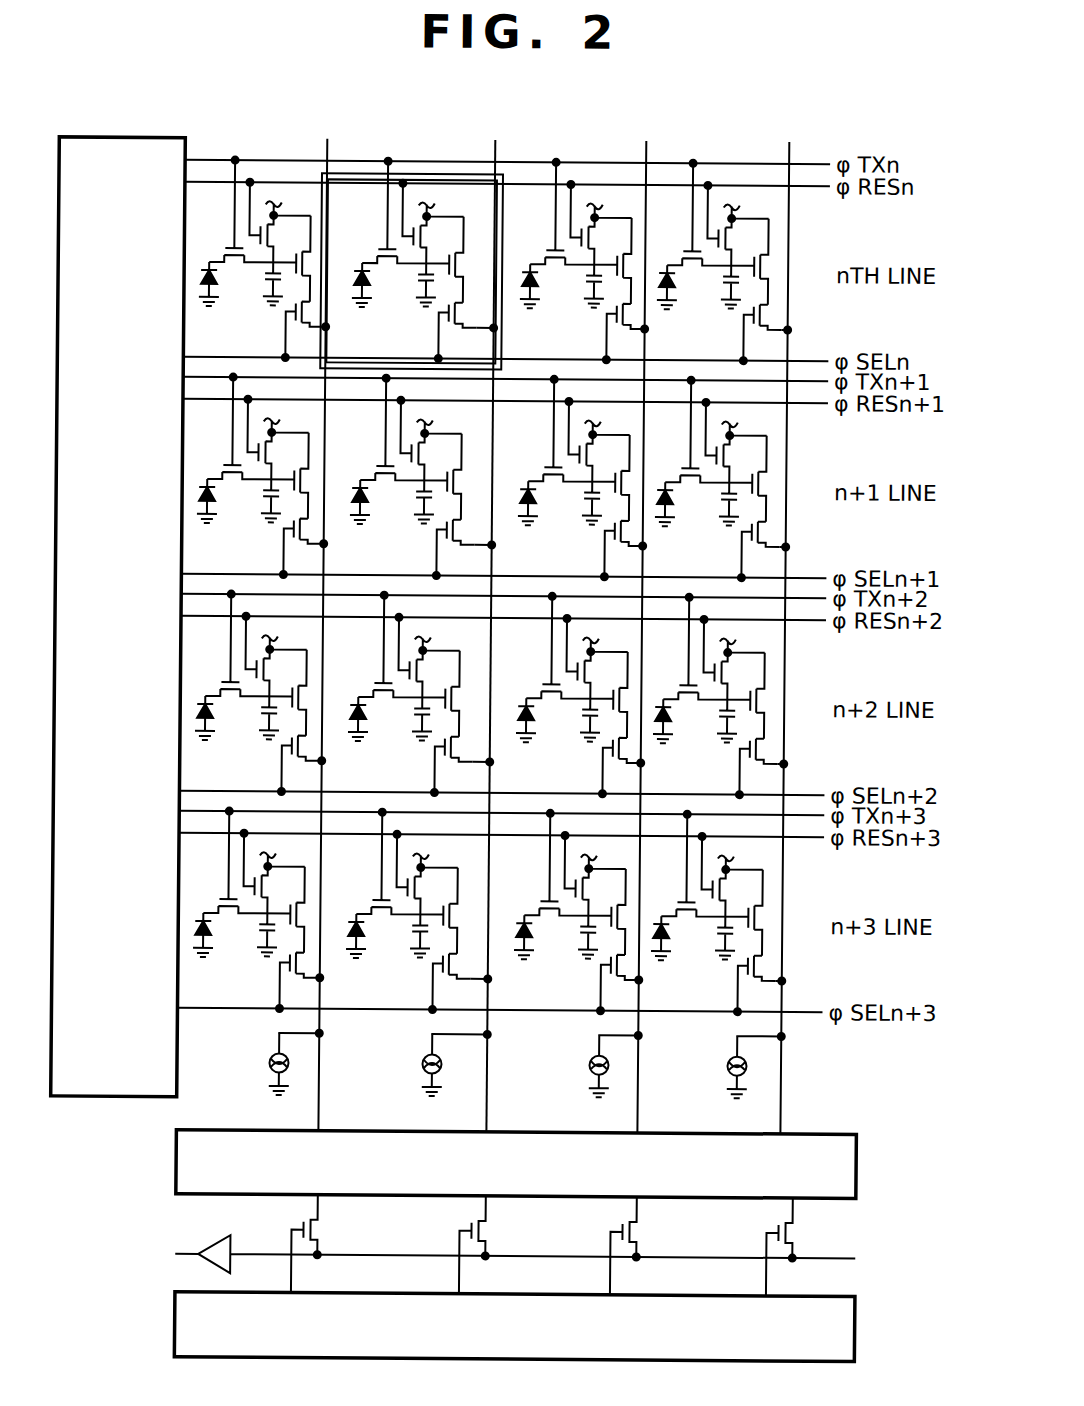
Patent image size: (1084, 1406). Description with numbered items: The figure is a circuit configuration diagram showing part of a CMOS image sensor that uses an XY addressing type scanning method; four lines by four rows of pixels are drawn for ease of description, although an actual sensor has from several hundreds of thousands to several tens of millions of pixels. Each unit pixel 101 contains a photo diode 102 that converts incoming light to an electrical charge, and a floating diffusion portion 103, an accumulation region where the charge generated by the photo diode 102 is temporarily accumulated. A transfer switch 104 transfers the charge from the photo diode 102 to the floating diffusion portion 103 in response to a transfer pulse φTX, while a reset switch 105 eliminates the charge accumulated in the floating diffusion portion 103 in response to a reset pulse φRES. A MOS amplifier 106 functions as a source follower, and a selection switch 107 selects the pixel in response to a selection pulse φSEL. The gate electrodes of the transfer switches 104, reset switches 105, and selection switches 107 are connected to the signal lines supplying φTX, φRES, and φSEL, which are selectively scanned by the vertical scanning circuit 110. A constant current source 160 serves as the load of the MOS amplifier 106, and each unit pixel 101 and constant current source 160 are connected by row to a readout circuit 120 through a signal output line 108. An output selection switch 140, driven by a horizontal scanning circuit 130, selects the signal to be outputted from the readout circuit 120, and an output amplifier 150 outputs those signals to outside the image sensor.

The unit pixel 101 is at (437, 242).
The photo diode 102 is at (348, 288).
The floating diffusion portion 103 is at (410, 278).
The transfer switch 104 is at (379, 246).
The reset switch 105 is at (409, 229).
The MOS amplifier 106 is at (457, 265).
The selection switch 107 is at (450, 329).
The signal output line 108 is at (493, 457).
The vertical scanning circuit 110 is at (134, 140).
The readout circuit 120 is at (861, 1164).
The horizontal scanning circuit 130 is at (861, 1329).
The output selection switch 140 is at (776, 1226).
The output amplifier 150 is at (200, 1242).
The constant current source 160 is at (728, 1067).